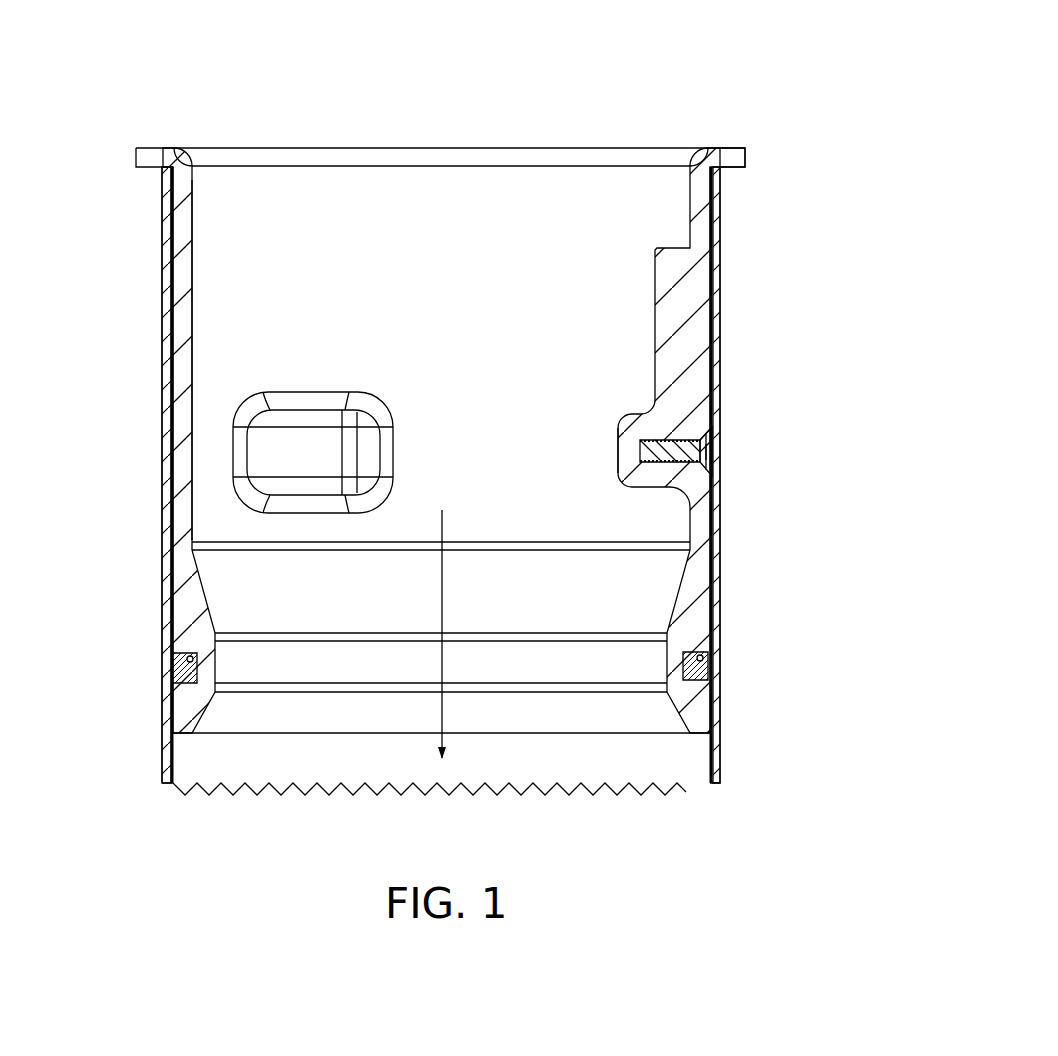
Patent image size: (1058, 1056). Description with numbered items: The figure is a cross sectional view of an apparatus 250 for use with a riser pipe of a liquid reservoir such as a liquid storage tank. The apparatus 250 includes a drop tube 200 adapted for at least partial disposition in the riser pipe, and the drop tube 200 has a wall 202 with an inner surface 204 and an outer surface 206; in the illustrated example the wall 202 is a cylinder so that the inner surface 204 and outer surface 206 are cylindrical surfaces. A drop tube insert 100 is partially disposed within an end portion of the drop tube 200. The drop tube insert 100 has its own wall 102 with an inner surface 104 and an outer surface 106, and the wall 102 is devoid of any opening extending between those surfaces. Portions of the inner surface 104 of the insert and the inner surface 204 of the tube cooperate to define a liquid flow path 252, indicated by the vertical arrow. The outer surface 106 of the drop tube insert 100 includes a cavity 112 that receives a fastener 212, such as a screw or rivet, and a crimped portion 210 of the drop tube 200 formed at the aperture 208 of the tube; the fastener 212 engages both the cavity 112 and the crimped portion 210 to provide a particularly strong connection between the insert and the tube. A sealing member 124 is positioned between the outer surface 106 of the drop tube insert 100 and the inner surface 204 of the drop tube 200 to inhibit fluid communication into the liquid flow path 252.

The drop tube insert 100 is at (440, 106).
The apparatus 250 is at (821, 91).
The wall 102 is at (188, 214).
The inner surface 104 is at (254, 360).
The outer surface 106 is at (111, 475).
The drop tube 200 is at (736, 465).
The wall 202 is at (162, 731).
The inner surface 204 is at (231, 475).
The outer surface 206 is at (107, 797).
The aperture 208 is at (693, 470).
The crimped portion 210 is at (713, 427).
The fastener 212 is at (716, 452).
The cavity 112 is at (640, 455).
The liquid flow path 252 is at (444, 515).
The sealing member 124 is at (712, 666).